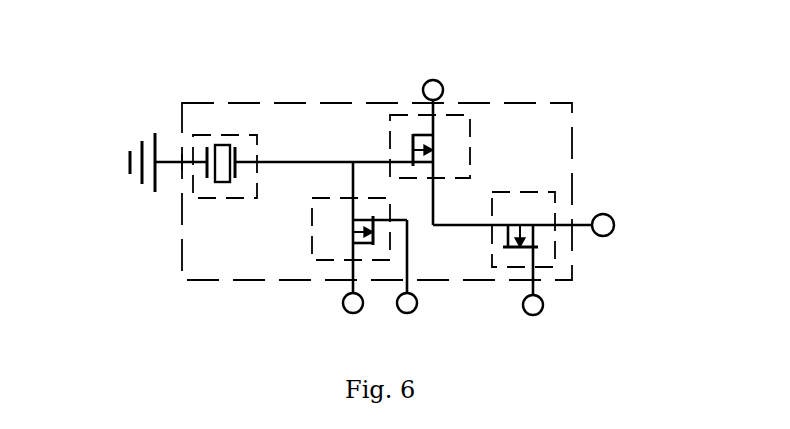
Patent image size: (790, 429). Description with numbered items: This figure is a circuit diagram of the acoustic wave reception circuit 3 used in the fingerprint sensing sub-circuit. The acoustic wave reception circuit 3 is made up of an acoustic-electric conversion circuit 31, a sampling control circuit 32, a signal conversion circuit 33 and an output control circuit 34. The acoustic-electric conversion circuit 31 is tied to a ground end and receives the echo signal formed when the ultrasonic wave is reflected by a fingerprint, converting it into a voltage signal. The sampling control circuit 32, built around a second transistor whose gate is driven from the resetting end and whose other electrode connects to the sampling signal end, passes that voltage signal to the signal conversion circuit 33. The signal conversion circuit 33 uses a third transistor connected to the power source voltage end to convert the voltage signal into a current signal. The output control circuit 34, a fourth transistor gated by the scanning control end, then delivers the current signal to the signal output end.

The acoustic wave reception circuit 3 is at (370, 198).
The acoustic-electric conversion circuit 31 is at (195, 196).
The sampling control circuit 32 is at (328, 262).
The signal conversion circuit 33 is at (390, 102).
The output control circuit 34 is at (552, 210).